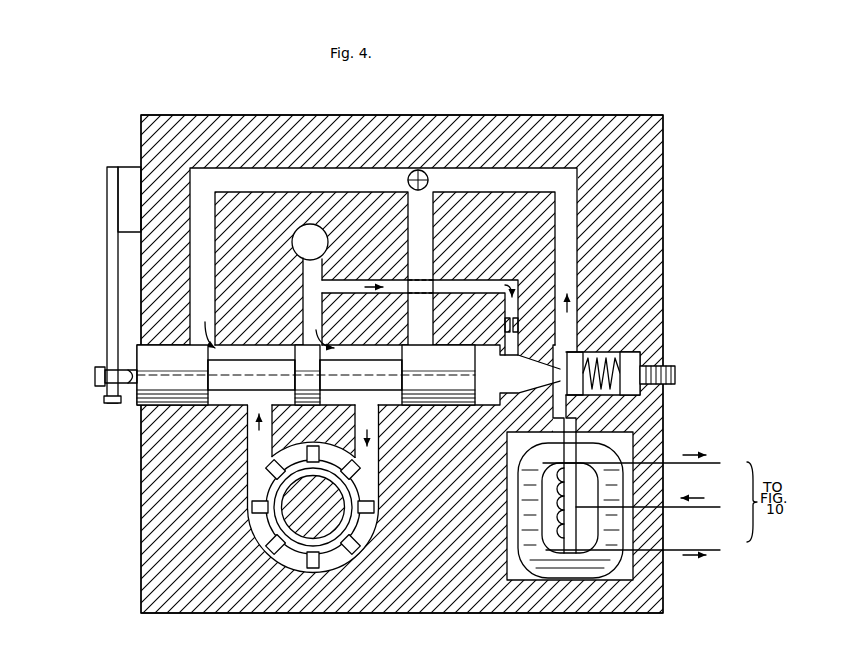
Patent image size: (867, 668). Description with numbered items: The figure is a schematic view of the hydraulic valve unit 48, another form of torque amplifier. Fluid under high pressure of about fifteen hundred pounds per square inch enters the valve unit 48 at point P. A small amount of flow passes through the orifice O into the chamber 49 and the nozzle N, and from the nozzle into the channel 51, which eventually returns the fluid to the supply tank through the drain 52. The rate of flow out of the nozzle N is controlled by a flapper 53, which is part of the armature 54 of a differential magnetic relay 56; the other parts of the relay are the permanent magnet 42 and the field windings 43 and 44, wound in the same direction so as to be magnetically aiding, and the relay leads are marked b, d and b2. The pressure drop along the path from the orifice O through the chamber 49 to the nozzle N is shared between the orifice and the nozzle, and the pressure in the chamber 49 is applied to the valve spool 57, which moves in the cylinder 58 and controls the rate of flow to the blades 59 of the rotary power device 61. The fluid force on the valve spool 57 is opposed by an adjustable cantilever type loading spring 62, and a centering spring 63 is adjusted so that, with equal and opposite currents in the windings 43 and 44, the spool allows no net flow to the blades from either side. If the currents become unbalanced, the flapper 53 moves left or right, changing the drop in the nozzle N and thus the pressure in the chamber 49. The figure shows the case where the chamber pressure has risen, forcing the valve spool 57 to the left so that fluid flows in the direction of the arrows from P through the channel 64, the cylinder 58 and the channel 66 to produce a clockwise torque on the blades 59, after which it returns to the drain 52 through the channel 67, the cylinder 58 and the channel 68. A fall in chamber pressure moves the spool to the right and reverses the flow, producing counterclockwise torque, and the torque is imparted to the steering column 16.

The hydraulic valve unit 48 is at (546, 112).
The channel 68 is at (212, 267).
The drain 52 is at (422, 168).
The channel 51 is at (577, 277).
The point P is at (310, 242).
The channel 64 is at (320, 310).
The orifice O is at (514, 318).
The chamber 49 is at (348, 375).
The nozzle N is at (547, 375).
The valve spool 57 is at (238, 377).
The cylinder 58 is at (237, 397).
The loading spring 62 is at (108, 260).
The flapper 53 is at (576, 352).
The centering spring 63 is at (593, 351).
The channel 67 is at (267, 446).
The channel 66 is at (377, 425).
The rotary power device 61 is at (342, 553).
The blades 59 is at (361, 503).
The steering column 16 is at (305, 521).
The differential magnetic relay 56 is at (629, 570).
The field winding 43 is at (562, 487).
The armature 54 is at (573, 438).
The permanent magnet 42 is at (578, 453).
The field winding 44 is at (560, 530).
The conductor b is at (649, 463).
The conductor d is at (664, 506).
The conductor b' b2 is at (650, 550).